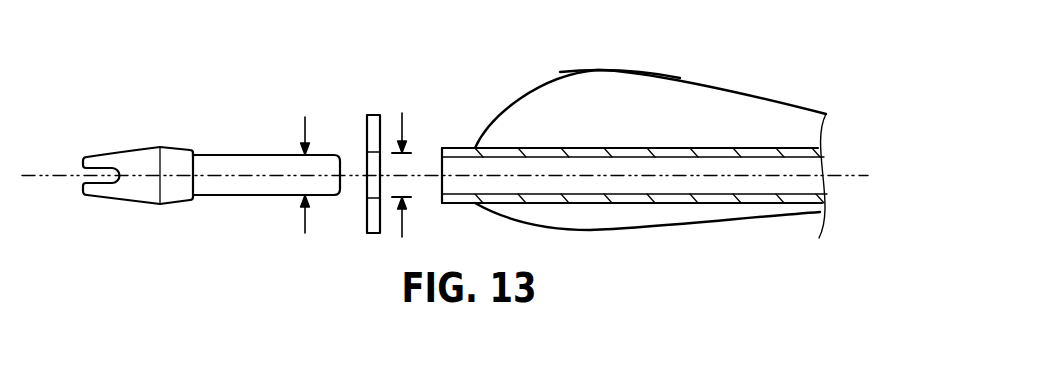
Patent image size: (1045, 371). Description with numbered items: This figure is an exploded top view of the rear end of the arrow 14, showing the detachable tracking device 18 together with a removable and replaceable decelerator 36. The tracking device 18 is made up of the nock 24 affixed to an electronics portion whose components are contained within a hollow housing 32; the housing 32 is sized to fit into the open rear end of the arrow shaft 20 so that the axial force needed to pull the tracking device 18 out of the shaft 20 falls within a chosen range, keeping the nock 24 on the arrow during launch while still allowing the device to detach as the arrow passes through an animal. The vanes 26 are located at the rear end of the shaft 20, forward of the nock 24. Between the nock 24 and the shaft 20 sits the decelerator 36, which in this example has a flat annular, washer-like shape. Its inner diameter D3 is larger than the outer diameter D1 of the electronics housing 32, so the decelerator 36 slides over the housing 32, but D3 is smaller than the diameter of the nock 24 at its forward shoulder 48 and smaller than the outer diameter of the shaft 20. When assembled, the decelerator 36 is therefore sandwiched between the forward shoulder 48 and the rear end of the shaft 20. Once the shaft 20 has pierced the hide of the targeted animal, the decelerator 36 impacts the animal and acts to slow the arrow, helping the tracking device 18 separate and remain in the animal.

The launchable projectile 14 is at (650, 120).
The tracking device 18 is at (138, 133).
The shaft 20 is at (468, 148).
The nock 24 is at (131, 161).
The vanes 26 is at (603, 89).
The housing 32 is at (261, 165).
The decelerator 36 is at (373, 117).
The forward shoulder 48 is at (195, 158).
The outer diameter of the electronics housing D1 is at (307, 158).
The inner diameter of the decelerator D3 is at (399, 160).